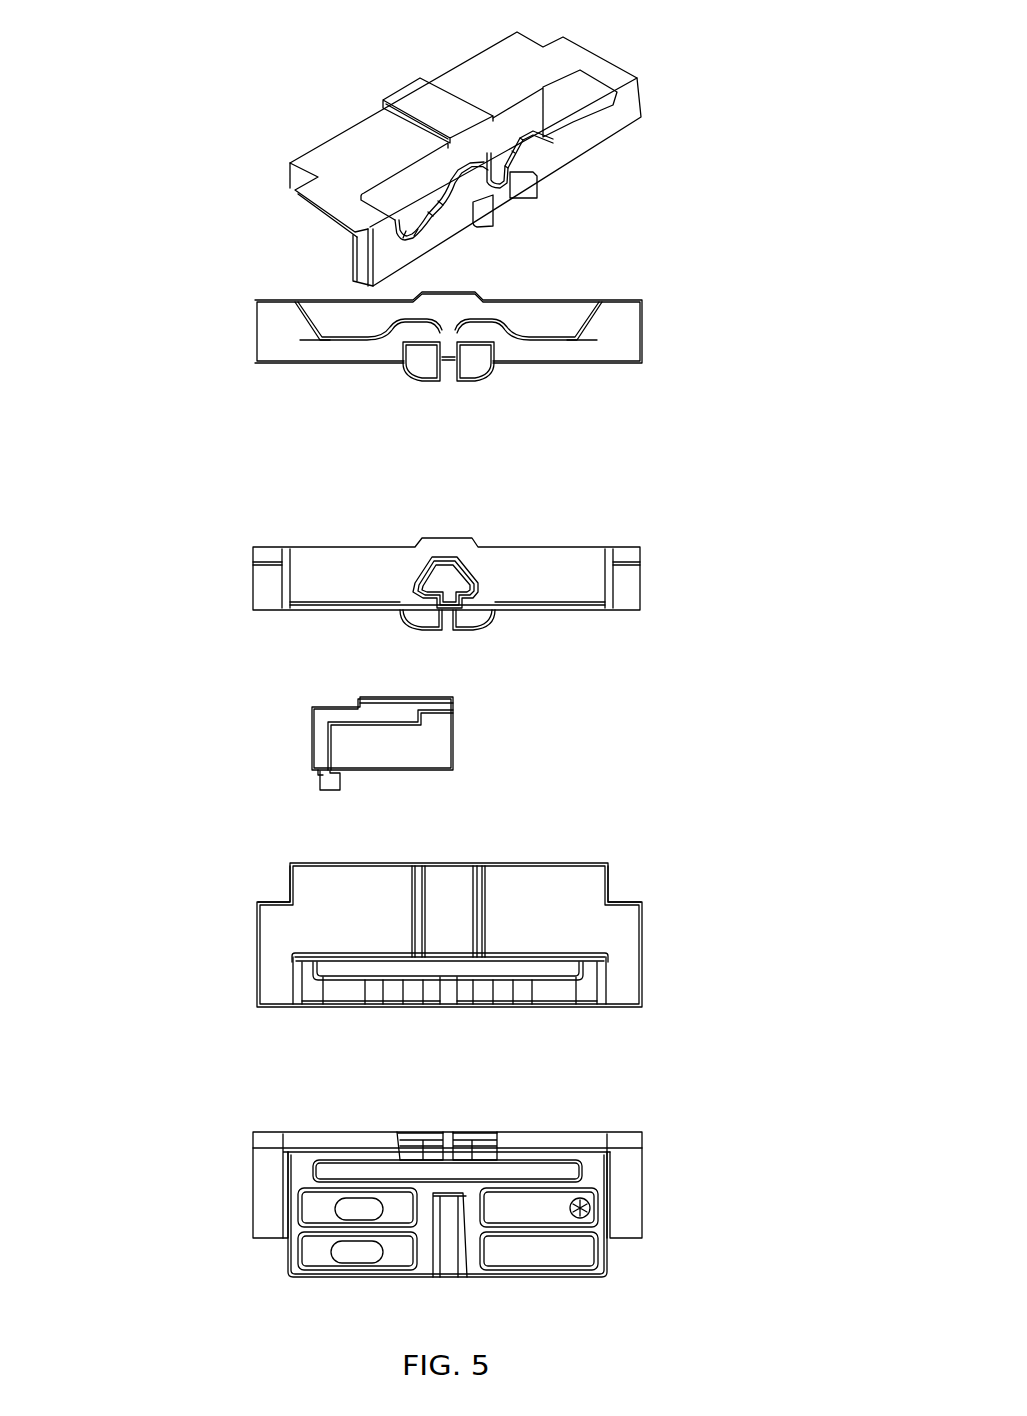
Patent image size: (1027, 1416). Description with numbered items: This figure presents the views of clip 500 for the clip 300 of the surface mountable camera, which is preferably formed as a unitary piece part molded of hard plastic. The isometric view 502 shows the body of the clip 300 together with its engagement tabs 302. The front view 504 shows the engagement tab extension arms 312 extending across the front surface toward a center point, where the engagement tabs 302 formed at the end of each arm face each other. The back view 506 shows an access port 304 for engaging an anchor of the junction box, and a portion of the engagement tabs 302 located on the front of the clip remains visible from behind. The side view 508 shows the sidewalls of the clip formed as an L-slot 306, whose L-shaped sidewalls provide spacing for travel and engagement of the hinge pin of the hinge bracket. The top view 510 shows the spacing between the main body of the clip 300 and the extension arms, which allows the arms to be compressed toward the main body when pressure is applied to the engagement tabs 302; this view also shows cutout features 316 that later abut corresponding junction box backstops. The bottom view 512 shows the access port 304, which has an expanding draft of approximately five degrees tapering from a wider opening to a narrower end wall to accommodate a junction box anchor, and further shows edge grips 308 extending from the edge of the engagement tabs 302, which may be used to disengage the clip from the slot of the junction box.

The clip 300 is at (607, 67).
The engagement tabs 302 is at (527, 190).
The access port 304 is at (443, 555).
The L-slot 306 is at (375, 737).
The edge grips 308 is at (480, 1065).
The engagement tab extension arms 312 is at (318, 357).
The cutout features 316 is at (268, 900).
The views of clip 500 is at (158, 66).
The isometric view 502 is at (207, 199).
The front view 504 is at (207, 335).
The back view 506 is at (207, 590).
The side view 508 is at (207, 740).
The top view 510 is at (207, 938).
The bottom view 512 is at (207, 1198).